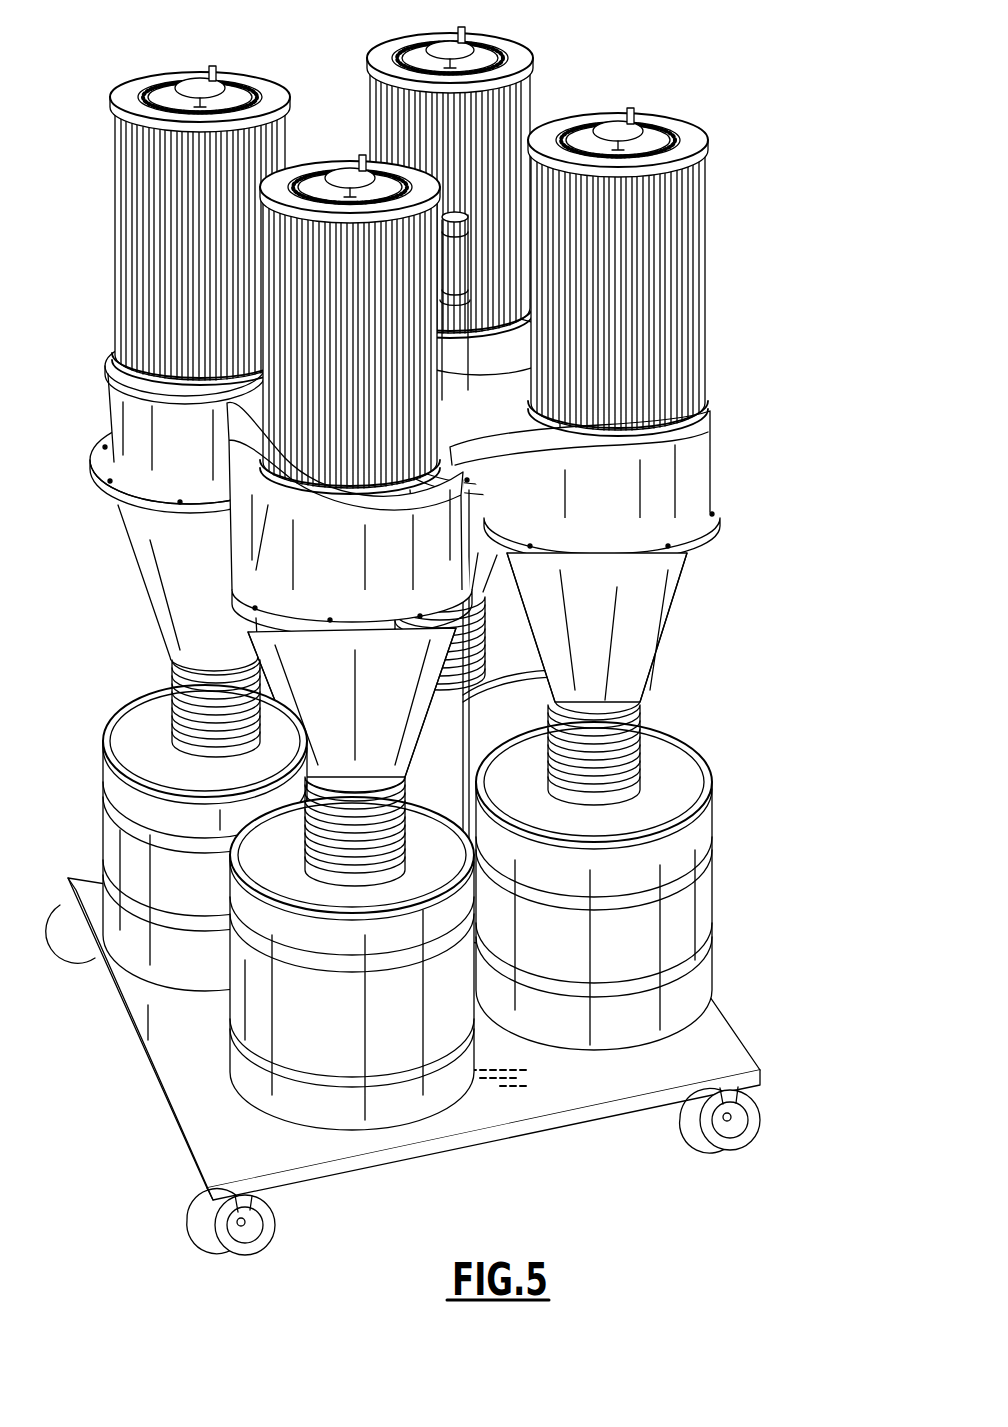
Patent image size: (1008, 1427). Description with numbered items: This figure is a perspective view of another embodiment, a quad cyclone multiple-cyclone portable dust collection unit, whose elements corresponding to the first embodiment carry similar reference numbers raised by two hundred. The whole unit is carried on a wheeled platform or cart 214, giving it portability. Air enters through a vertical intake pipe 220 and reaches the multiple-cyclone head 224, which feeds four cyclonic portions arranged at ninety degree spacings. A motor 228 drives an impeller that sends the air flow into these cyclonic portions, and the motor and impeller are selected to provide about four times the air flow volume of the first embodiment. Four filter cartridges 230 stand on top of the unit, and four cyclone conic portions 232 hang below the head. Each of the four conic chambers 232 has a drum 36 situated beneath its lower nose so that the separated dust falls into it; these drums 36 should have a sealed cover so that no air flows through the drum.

The wheeled platform 214 is at (727, 1020).
The vertical intake pipe 220 is at (493, 683).
The multiple-cyclone head 224 is at (722, 452).
The motor 228 is at (470, 233).
The filter cartridge 230 is at (325, 158).
The cyclone conic portion 232 is at (133, 560).
The drum 36 is at (150, 983).